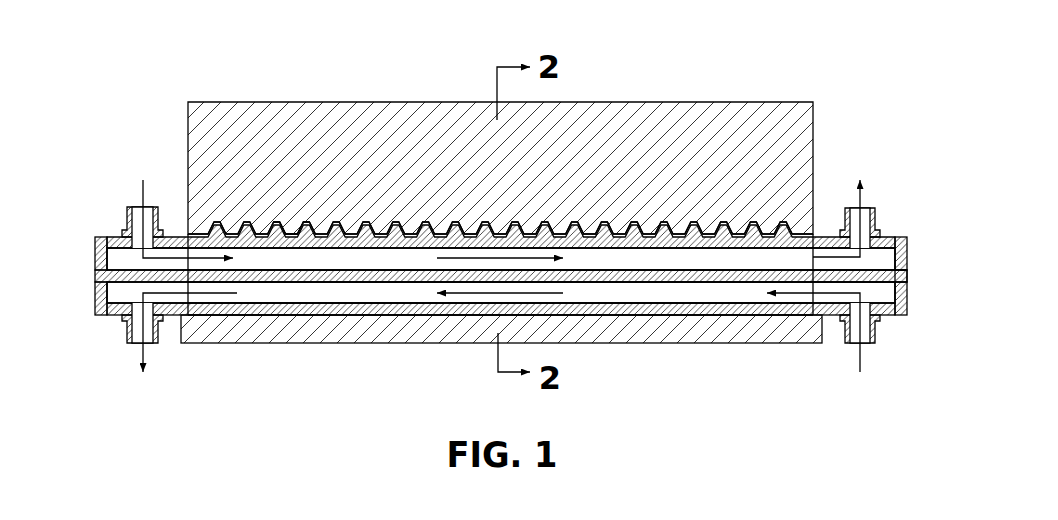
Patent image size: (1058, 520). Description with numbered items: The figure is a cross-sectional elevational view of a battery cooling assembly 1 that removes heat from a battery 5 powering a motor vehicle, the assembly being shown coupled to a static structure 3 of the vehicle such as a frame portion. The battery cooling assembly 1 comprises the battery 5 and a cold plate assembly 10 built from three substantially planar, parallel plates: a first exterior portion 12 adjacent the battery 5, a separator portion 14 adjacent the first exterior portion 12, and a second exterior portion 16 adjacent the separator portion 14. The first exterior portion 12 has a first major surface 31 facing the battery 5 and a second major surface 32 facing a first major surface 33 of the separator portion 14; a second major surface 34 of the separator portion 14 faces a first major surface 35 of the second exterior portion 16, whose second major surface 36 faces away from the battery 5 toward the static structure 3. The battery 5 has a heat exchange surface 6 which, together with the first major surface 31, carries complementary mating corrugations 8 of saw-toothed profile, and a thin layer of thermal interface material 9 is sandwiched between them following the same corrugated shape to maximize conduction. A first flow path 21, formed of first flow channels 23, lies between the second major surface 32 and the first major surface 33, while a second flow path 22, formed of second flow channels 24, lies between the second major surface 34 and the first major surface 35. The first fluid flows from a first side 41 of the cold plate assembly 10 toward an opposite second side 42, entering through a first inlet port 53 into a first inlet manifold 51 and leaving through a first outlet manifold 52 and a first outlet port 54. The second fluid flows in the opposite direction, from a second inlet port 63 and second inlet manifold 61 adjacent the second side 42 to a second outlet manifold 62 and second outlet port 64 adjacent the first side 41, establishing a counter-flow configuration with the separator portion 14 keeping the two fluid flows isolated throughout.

The battery cooling assembly 1 is at (501, 212).
The static structure 3 is at (442, 333).
The battery 5 is at (485, 120).
The heat exchange surface 6 is at (262, 237).
The corrugations 8 is at (290, 219).
The thermal interface material 9 is at (333, 232).
The cold plate assembly 10 is at (501, 235).
The first exterior portion 12 is at (896, 240).
The separator portion 14 is at (907, 268).
The second exterior portion 16 is at (897, 312).
The first flow path 21 is at (420, 258).
The second flow path 22 is at (355, 290).
The first flow channels 23 is at (501, 259).
The second flow channels 24 is at (501, 292).
The first major surface of first exterior portion 31 is at (600, 268).
The second major surface of first exterior portion 32 is at (660, 315).
The first major surface of separator portion 33 is at (652, 300).
The second major surface of separator portion 34 is at (717, 282).
The first major surface of second exterior portion 35 is at (682, 290).
The second major surface of second exterior portion 36 is at (758, 316).
The first side 41 is at (96, 276).
The second side 42 is at (907, 279).
The first inlet manifold 51 is at (120, 258).
The first outlet manifold 52 is at (882, 232).
The first inlet port 53 is at (135, 207).
The first outlet port 54 is at (870, 208).
The second inlet manifold 61 is at (887, 305).
The second outlet manifold 62 is at (120, 293).
The second inlet port 63 is at (870, 345).
The second outlet port 64 is at (132, 340).